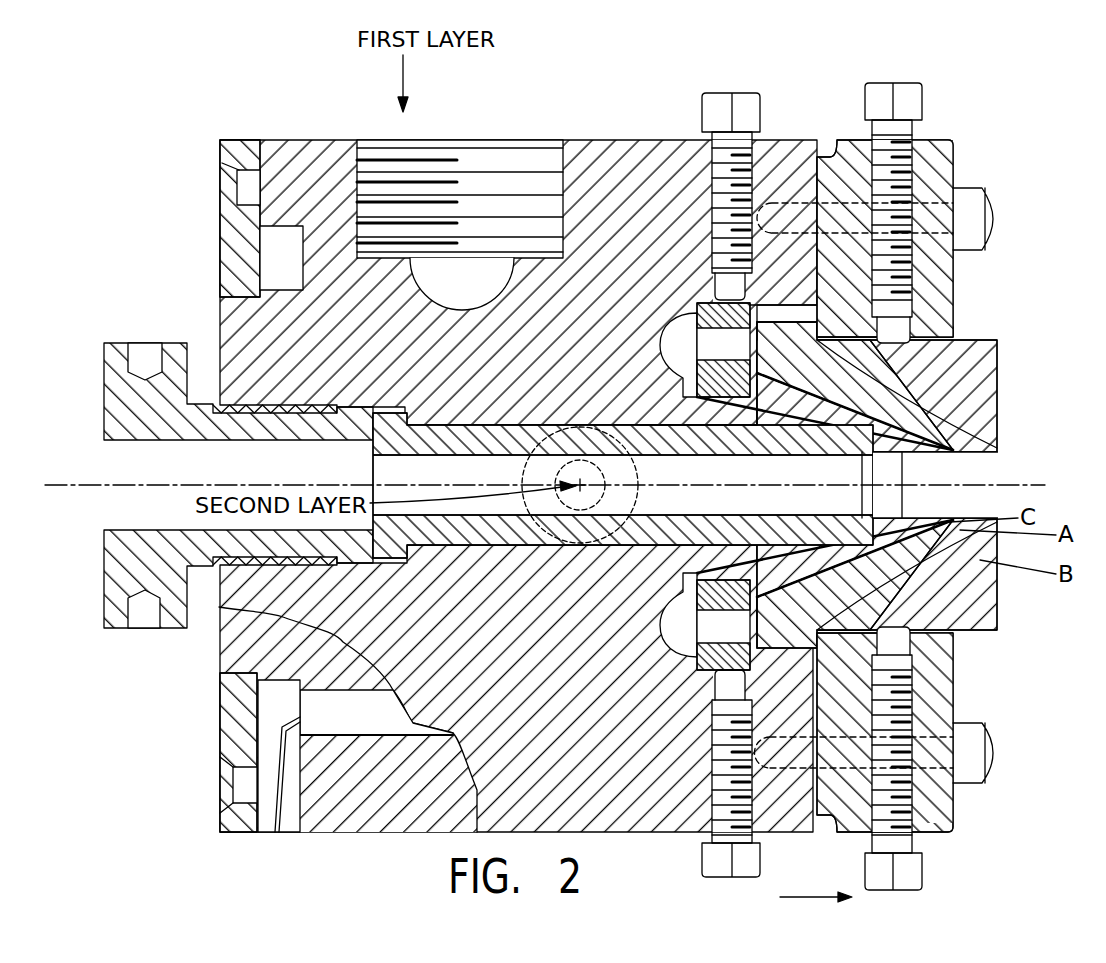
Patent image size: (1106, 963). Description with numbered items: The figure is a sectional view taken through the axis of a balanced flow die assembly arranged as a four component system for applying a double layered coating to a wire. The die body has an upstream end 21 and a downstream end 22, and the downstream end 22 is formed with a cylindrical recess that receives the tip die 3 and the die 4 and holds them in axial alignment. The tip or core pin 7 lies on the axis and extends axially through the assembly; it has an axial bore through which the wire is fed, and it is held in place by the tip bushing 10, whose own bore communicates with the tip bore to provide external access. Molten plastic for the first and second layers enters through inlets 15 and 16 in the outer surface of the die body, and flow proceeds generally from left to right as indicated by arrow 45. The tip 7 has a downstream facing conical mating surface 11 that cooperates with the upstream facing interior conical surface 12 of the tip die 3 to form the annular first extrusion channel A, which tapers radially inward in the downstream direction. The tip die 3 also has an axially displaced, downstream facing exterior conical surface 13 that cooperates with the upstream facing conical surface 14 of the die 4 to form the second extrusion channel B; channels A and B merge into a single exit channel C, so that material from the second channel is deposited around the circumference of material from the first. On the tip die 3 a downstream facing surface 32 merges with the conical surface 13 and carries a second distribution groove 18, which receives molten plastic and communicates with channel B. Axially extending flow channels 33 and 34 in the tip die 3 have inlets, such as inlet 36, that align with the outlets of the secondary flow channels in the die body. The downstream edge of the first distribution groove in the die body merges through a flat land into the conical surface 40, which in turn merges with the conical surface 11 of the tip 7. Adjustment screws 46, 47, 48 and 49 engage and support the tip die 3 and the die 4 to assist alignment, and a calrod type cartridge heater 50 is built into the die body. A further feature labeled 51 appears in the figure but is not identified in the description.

The tip die 3 is at (835, 338).
The die 4 is at (998, 625).
The tip or core pin 7 is at (654, 450).
The tip bushing 10 is at (108, 385).
The conically shaped mating surface 11 is at (997, 405).
The upstream facing interior conical surface 12 is at (935, 360).
The downstream facing exterior conical surface 13 is at (915, 333).
The conical surface 14 is at (998, 340).
The inlet 15 is at (512, 150).
The inlet 16 is at (530, 472).
The second distribution groove 18 is at (752, 303).
The upstream end 21 is at (228, 322).
The downstream end 22 is at (822, 160).
The surface 32 is at (757, 325).
The axially extending flow channel 33 is at (735, 358).
The axially extending flow channel 34 is at (735, 641).
The inlet 36 is at (678, 485).
The conical surface 40 is at (960, 545).
The arrow 45 is at (816, 897).
The adjustment screw 46 is at (745, 102).
The adjustment screw 47 is at (705, 858).
The adjustment screw 48 is at (915, 97).
The adjustment screw 49 is at (912, 880).
The calrod type cartridge heater 50 is at (310, 708).
The body surface 51 is at (695, 300).